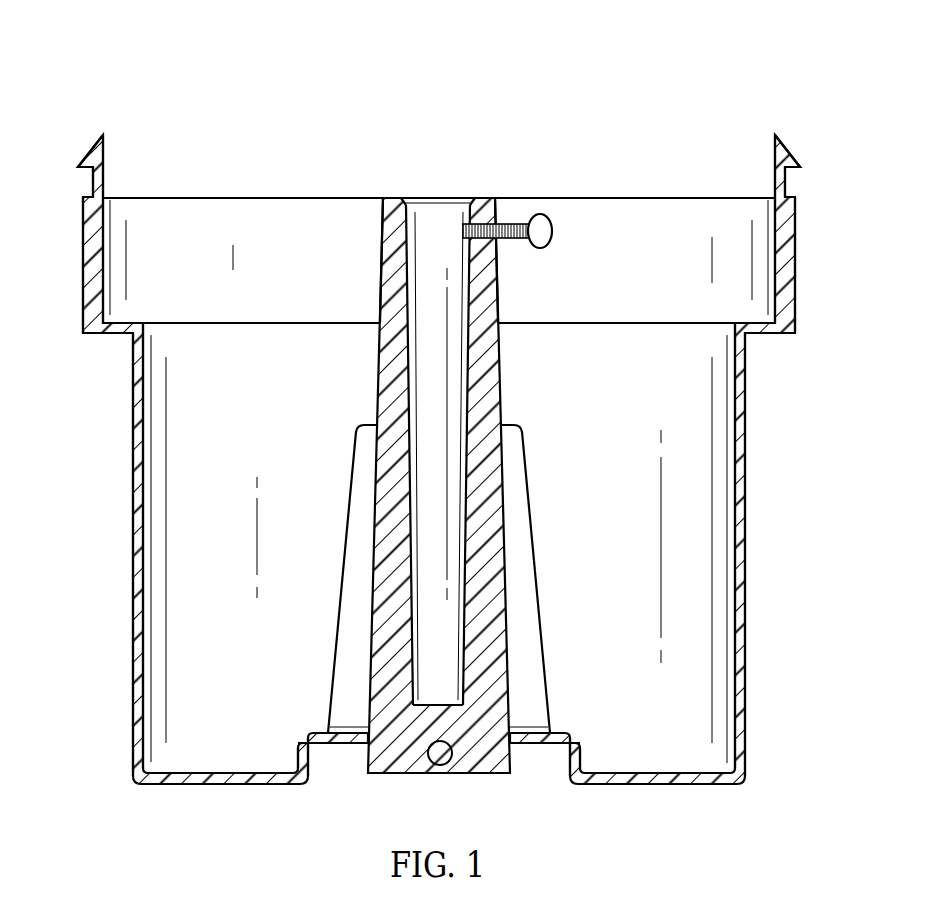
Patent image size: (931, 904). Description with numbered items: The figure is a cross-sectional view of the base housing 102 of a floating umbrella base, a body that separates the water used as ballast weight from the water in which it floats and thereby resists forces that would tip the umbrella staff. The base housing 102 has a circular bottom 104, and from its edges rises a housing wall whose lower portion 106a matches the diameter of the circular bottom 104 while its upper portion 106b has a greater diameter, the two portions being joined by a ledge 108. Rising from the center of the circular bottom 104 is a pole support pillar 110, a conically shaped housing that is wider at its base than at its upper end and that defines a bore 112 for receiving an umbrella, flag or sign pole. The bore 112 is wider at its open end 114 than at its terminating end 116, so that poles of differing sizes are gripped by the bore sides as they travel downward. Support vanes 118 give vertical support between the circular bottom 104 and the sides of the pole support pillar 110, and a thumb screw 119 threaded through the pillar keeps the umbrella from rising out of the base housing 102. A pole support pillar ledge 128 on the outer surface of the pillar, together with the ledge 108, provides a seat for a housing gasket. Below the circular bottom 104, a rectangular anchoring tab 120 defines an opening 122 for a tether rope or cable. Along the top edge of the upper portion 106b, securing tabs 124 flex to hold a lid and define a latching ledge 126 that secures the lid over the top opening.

The base housing 102 is at (247, 70).
The circular bottom 104 is at (656, 786).
The lower portion of the housing wall 106a is at (133, 550).
The upper portion of the housing wall 106b is at (85, 285).
The ledge 108 is at (108, 335).
The pole support pillar 110 is at (494, 393).
The bore 112 is at (426, 212).
The open end 114 is at (455, 197).
The terminating end 116 is at (430, 703).
The support vanes 118 is at (343, 580).
The thumb screw 119 is at (553, 231).
The anchoring tab 120 is at (390, 775).
The opening 122 is at (442, 765).
The securing tabs 124 is at (104, 155).
The latching ledge 126 is at (88, 170).
The pole support pillar ledge 128 is at (378, 322).